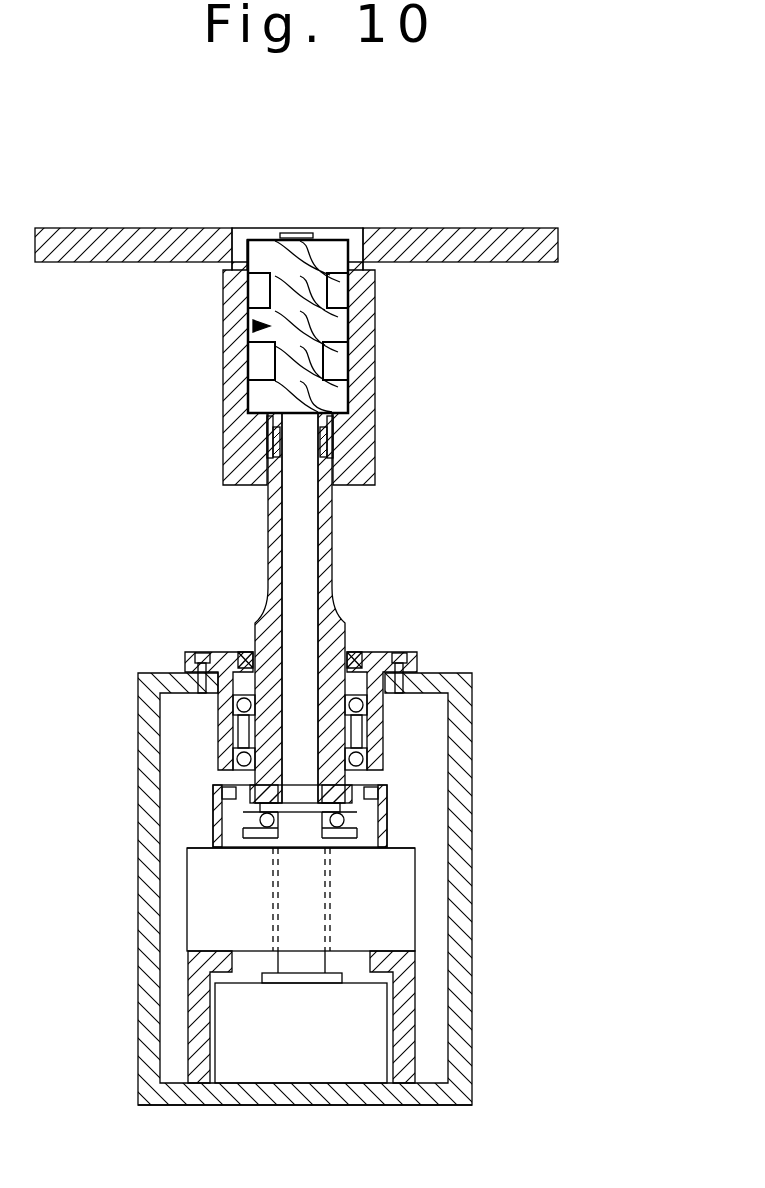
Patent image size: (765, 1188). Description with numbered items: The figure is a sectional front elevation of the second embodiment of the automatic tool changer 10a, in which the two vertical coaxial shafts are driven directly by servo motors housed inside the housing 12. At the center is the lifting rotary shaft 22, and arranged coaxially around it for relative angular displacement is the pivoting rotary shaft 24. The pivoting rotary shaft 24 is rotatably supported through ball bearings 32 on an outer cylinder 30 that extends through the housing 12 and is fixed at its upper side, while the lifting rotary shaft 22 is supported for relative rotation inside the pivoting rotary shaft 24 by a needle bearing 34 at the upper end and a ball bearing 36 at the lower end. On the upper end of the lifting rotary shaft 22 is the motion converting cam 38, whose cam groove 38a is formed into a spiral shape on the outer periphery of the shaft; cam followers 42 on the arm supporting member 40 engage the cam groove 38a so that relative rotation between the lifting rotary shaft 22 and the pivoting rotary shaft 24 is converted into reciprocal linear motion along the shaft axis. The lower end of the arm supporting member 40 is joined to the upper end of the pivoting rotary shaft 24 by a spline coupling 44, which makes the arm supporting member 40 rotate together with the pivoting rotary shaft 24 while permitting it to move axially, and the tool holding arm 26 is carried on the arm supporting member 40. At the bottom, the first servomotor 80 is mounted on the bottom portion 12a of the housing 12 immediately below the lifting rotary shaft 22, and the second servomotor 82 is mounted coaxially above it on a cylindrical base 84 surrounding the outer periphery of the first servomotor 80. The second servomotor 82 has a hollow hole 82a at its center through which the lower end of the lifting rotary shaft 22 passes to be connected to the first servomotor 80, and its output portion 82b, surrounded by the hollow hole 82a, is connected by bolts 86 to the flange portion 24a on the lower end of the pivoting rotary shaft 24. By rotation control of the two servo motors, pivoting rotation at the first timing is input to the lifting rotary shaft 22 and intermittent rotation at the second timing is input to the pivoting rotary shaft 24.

The automatic tool changer 10a is at (512, 500).
The housing 12 is at (472, 772).
The bottom portion 12a is at (293, 1075).
The lifting rotary shaft 22 is at (293, 573).
The pivoting rotary shaft 24 is at (277, 533).
The flange portion 24a is at (213, 808).
The tool holding arm 26 is at (522, 227).
The outer cylinder 30 is at (385, 720).
The ball bearings 32 is at (217, 747).
The needle bearing 34 is at (278, 440).
The ball bearing 36 is at (215, 850).
The motion converting cam 38 is at (248, 327).
The cam groove 38a is at (278, 365).
The arm supporting member 40 is at (378, 405).
The cam follower 42 is at (262, 292).
The spline coupling 44 is at (333, 443).
The first servomotor 80 is at (227, 1040).
The second servomotor 82 is at (205, 917).
The hollow hole 82a is at (325, 893).
The output portion 82b is at (383, 847).
The cylindrical base 84 is at (403, 1030).
The bolts 86 is at (230, 813).